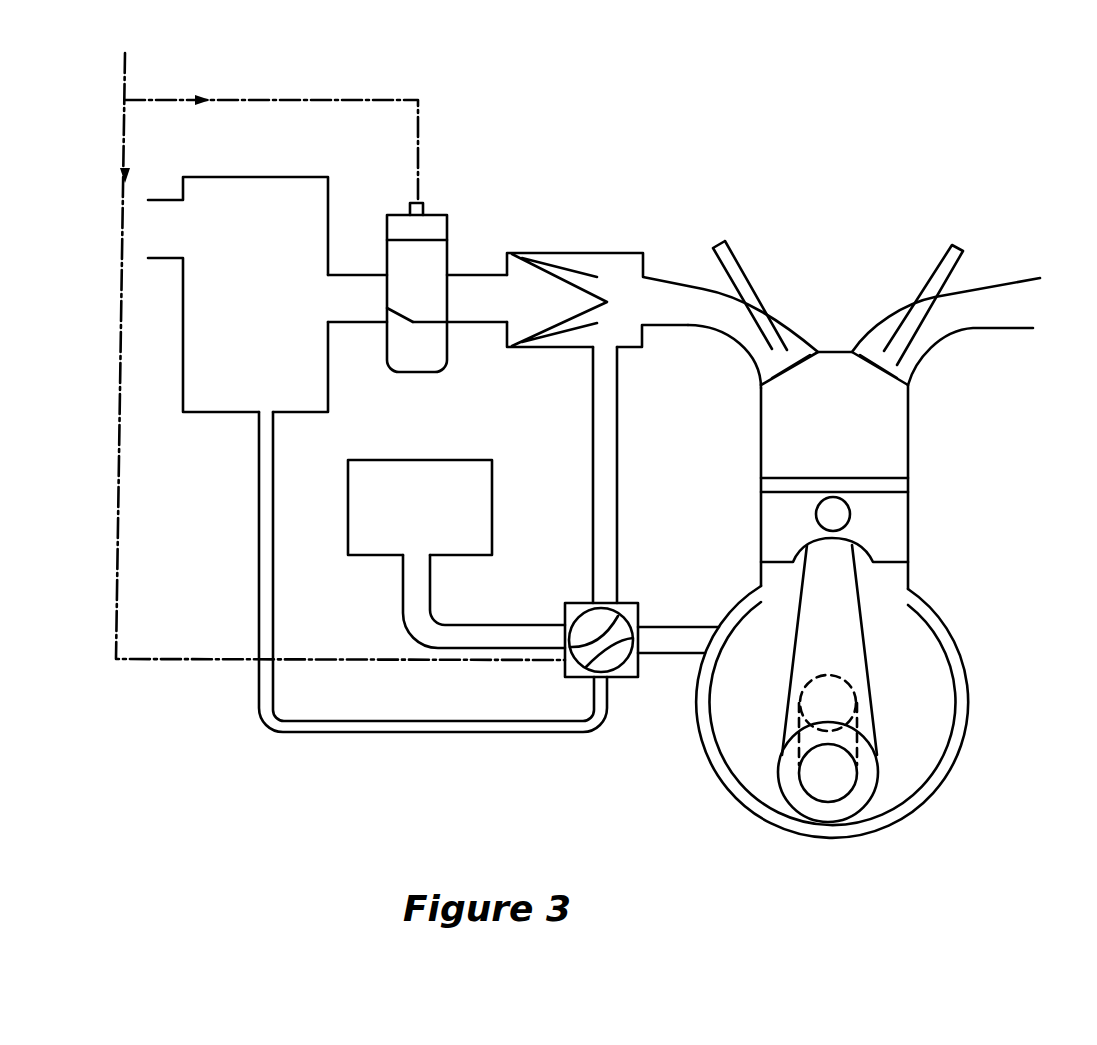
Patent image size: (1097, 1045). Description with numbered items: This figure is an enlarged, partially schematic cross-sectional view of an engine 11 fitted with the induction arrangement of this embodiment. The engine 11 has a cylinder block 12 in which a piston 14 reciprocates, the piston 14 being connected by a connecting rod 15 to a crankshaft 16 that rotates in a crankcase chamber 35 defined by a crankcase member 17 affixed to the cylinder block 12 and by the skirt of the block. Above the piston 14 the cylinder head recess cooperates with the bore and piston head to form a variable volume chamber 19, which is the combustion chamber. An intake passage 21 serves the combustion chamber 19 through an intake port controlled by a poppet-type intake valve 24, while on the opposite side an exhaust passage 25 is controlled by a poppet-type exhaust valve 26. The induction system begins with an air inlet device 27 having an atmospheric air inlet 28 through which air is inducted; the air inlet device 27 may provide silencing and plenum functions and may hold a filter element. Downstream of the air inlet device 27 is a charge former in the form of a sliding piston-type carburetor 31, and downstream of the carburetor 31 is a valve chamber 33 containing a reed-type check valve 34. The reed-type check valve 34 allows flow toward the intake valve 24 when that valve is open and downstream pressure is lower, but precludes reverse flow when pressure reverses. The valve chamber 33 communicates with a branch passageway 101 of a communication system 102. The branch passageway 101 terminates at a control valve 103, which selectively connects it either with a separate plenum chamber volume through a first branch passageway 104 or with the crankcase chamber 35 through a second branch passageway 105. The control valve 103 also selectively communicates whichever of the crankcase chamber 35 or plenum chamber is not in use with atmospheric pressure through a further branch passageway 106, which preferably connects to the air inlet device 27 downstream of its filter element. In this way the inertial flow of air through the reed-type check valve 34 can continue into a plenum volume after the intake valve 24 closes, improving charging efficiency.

The engine 11 is at (985, 508).
The cylinder block 12 is at (908, 457).
The piston 14 is at (893, 527).
The connecting rod 15 is at (857, 643).
The crankshaft 16 is at (848, 795).
The crankcase member 17 is at (970, 713).
The variable volume chamber 19 is at (837, 370).
The intake passage 21 is at (742, 333).
The intake valve 24 is at (788, 353).
The exhaust passage 25 is at (995, 292).
The exhaust valve 26 is at (882, 353).
The air inlet device 27 is at (209, 412).
The atmospheric air inlet 28 is at (163, 245).
The carburetor 31 is at (385, 253).
The valve chamber 33 is at (625, 272).
The reed-type check valve 34 is at (573, 268).
The crankcase chamber 35 is at (740, 797).
The branch passageway 101 is at (607, 440).
The communication system 102 is at (588, 498).
The control valve 103 is at (622, 620).
The first branch passageway 104 is at (503, 637).
The second branch passageway 105 is at (660, 647).
The further branch passageway 106 is at (452, 727).